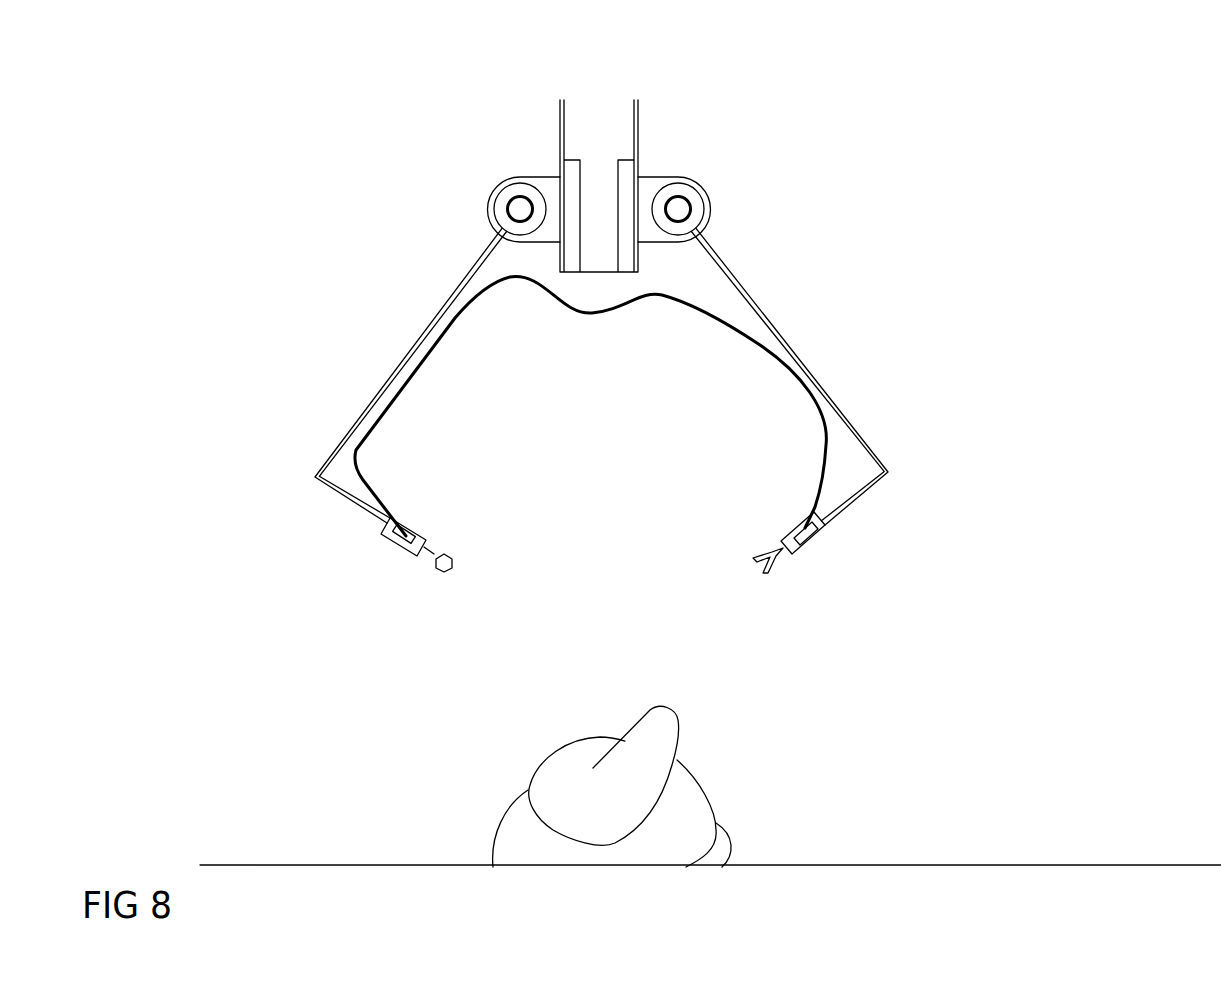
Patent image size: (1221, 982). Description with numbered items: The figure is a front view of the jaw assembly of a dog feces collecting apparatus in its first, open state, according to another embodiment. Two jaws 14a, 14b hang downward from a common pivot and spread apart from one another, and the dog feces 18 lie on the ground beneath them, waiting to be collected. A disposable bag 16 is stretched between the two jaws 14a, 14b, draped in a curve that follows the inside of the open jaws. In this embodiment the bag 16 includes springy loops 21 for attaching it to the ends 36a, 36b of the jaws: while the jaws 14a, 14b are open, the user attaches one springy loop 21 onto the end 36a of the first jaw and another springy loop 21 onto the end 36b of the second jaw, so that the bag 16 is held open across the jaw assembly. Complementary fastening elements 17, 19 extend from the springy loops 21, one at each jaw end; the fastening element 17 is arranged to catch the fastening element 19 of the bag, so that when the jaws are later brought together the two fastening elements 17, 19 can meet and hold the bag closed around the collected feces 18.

The jaw 14a is at (805, 363).
The jaw 14b is at (410, 348).
The disposable bag 16 is at (760, 340).
The fastening element 17 is at (753, 560).
The dog feces 18 is at (610, 815).
The fastening element 19 is at (447, 556).
The springy loop 21 is at (385, 532).
The end of the jaw 36a is at (797, 530).
The end of the jaw 36b is at (405, 533).